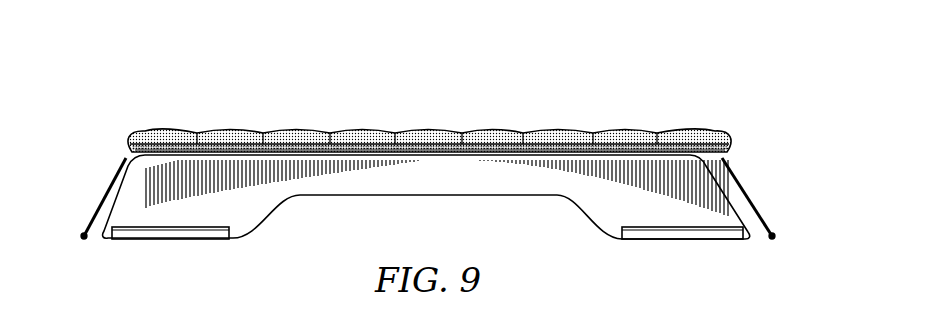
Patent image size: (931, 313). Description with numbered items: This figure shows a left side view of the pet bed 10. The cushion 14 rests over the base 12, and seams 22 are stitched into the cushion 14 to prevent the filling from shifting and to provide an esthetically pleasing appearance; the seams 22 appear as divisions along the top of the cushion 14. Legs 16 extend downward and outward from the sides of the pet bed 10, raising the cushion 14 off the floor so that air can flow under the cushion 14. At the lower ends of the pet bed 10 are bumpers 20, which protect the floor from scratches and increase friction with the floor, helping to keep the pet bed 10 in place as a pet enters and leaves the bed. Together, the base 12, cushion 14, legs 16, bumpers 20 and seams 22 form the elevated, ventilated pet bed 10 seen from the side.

The pet bed 10 is at (417, 186).
The base 12 is at (377, 182).
The cushion 14 is at (562, 135).
The legs 16 is at (108, 197).
The bumpers 20 is at (84, 235).
The seams 22 is at (263, 135).